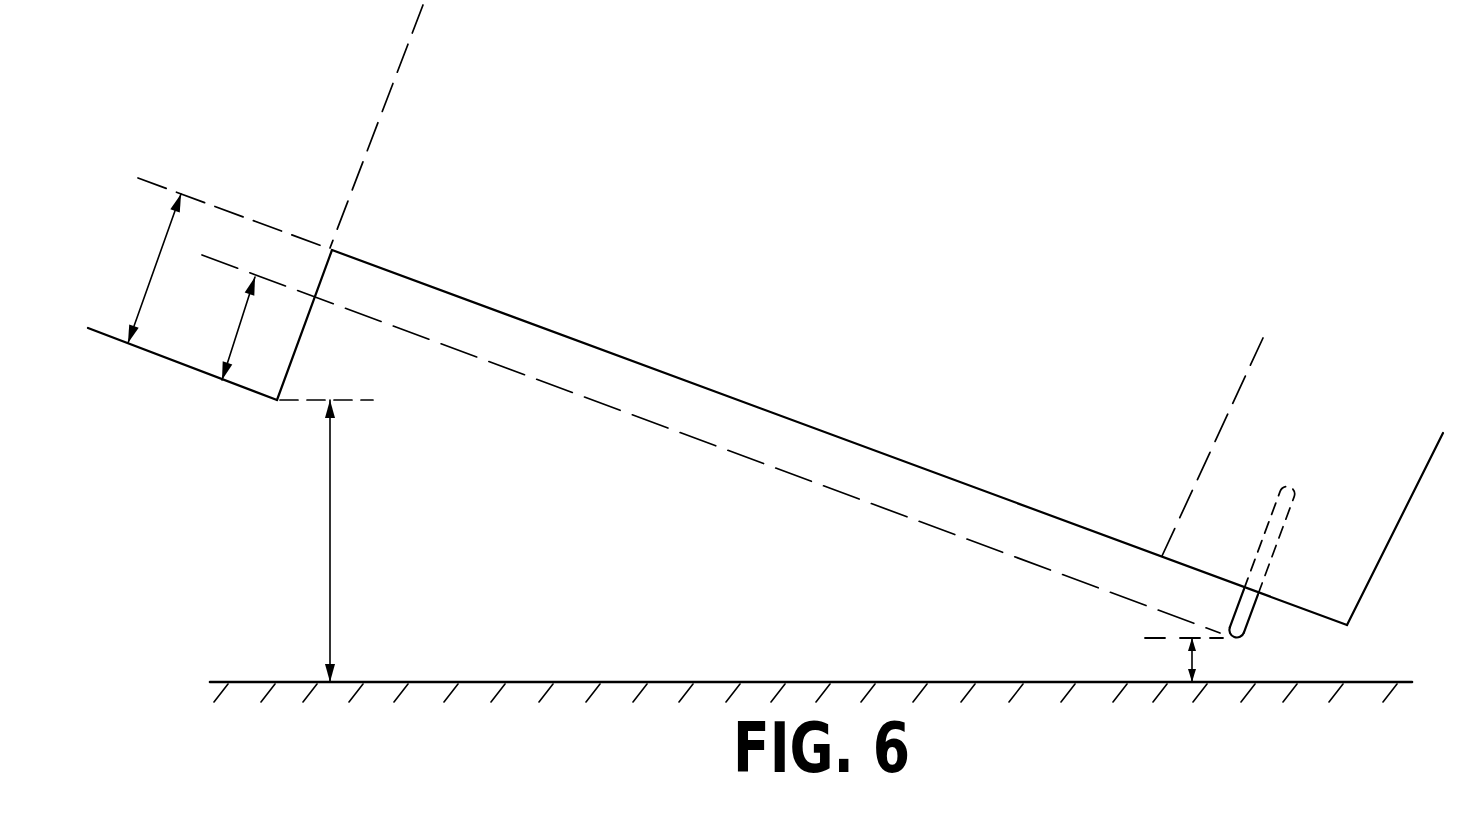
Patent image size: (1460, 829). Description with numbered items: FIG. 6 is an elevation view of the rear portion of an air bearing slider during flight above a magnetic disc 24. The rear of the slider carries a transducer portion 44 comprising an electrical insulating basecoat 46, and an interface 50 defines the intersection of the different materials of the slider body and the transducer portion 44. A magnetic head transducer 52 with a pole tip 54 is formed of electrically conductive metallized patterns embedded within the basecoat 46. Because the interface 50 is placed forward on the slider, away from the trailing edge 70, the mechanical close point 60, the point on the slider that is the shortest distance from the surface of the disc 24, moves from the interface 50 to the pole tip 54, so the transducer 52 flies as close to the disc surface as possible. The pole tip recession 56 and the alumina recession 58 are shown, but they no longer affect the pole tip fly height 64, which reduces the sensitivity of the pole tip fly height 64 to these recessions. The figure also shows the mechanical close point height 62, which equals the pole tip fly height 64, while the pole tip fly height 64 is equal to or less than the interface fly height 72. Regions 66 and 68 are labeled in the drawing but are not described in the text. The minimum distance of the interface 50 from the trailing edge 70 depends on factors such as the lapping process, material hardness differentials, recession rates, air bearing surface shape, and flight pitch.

The magnetic disc 24 is at (580, 738).
The transducer portion 44 is at (1324, 383).
The electrical insulating basecoat 46 is at (1356, 441).
The interface 50 is at (412, 38).
The transducer 52 is at (1283, 502).
The pole tip 54 is at (1250, 615).
The pole tip recession 56 is at (240, 322).
The alumina recession 58 is at (155, 277).
The mechanical close point 60 is at (1240, 640).
The mechanical close point height 62 is at (1181, 657).
The pole tip fly height 64 is at (1217, 660).
The upper region 66 is at (282, 97).
The panel 68 is at (893, 338).
The trailing edge 70 is at (1404, 516).
The interface fly height 72 is at (331, 528).